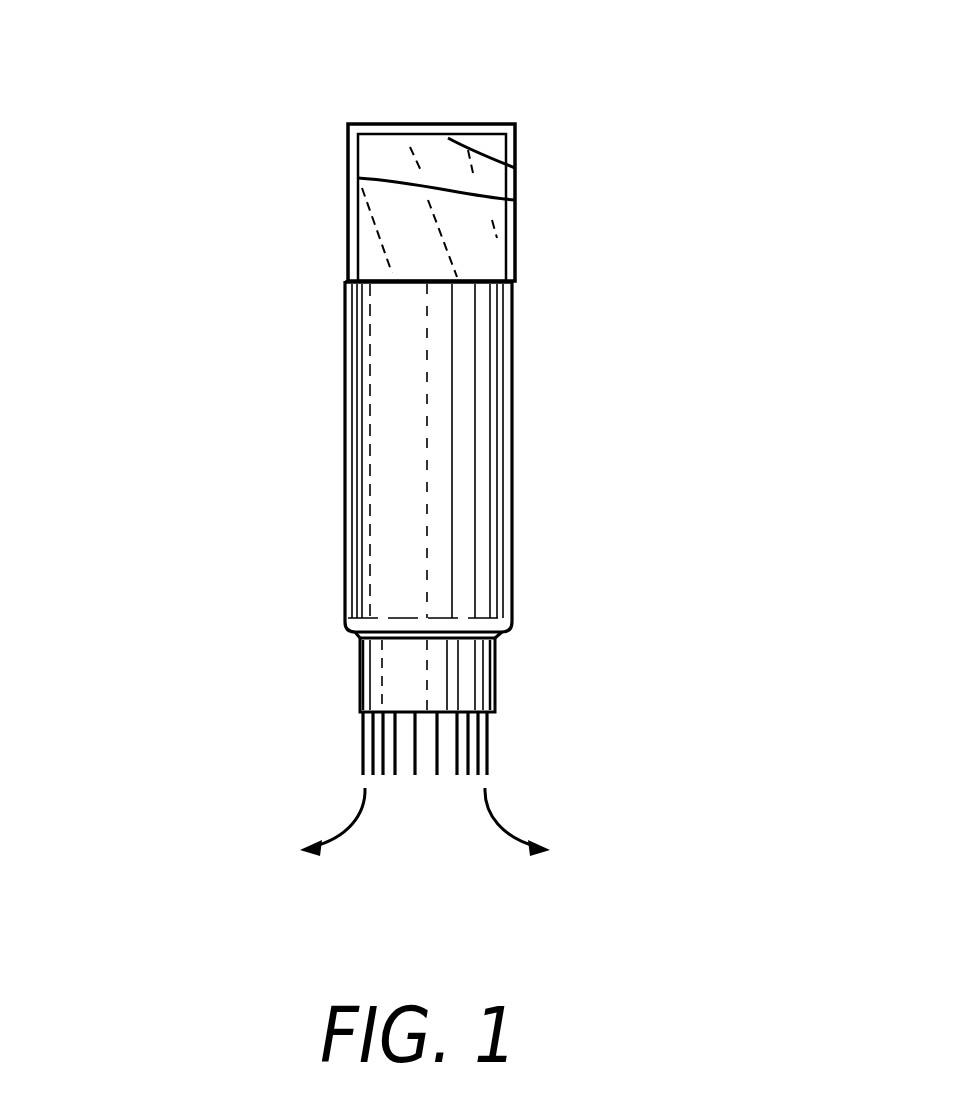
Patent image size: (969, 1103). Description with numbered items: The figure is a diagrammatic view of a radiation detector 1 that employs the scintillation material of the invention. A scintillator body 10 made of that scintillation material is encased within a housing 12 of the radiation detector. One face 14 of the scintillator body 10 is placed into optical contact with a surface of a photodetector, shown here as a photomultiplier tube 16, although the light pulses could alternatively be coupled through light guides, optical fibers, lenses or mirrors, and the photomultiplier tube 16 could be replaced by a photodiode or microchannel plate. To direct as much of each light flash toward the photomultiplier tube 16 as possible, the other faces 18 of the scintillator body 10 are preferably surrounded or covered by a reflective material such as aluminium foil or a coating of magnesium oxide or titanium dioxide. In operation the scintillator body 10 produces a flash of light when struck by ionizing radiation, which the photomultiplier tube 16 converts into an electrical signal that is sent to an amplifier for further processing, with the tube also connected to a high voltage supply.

The radiation detector 1 is at (320, 509).
The scintillator body 10 is at (395, 213).
The housing 12 is at (410, 124).
The face of the scintillator body 14 is at (398, 283).
The photomultiplier tube 16 is at (513, 443).
The other faces of the scintillator body 18 is at (515, 168).